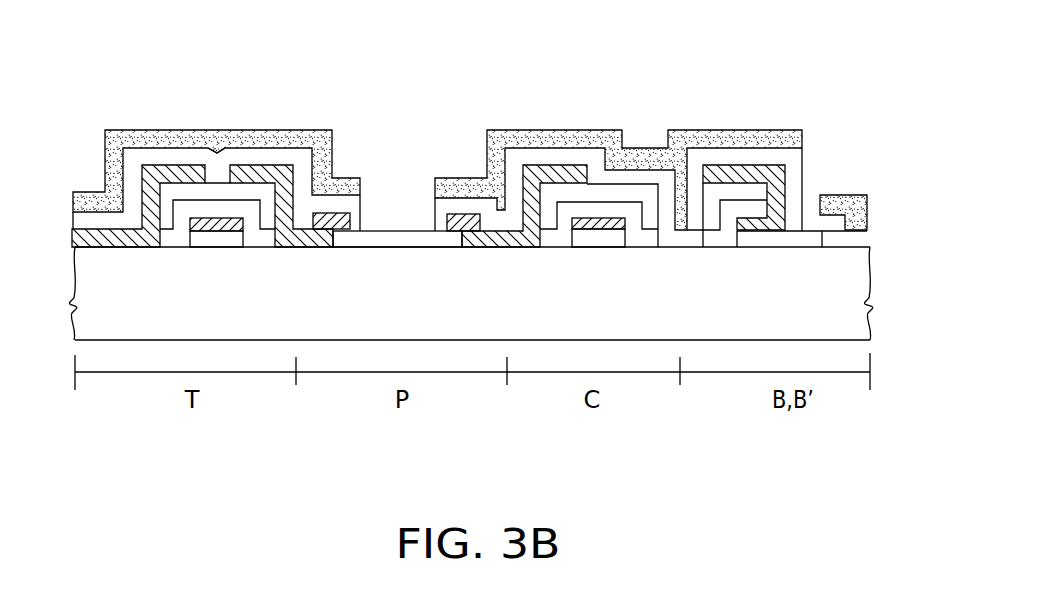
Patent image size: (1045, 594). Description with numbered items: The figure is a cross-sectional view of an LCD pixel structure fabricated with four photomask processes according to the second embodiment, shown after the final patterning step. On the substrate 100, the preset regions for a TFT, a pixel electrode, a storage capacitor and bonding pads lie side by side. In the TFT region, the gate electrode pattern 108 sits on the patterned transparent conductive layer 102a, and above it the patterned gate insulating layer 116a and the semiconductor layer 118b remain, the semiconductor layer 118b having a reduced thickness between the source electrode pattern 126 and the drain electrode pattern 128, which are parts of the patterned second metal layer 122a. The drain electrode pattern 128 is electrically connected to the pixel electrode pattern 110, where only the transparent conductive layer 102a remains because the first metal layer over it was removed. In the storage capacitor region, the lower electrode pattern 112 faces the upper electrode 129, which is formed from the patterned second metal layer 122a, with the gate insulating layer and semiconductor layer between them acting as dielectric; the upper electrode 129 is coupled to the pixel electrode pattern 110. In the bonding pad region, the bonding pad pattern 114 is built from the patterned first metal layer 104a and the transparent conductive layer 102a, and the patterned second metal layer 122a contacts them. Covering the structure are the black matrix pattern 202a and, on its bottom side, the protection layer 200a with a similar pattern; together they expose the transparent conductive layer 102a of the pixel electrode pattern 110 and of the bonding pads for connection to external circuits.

The substrate 100 is at (818, 332).
The patterned transparent conductive layer 102a is at (808, 240).
The patterned first metal layer 104a is at (750, 233).
The gate electrode pattern 108 is at (233, 207).
The pixel electrode pattern 110 is at (403, 210).
The lower electrode pattern 112 is at (600, 202).
The bonding pad pattern 114 is at (801, 217).
The patterned gate insulating layer 116a is at (255, 245).
The semiconductor layer 118b is at (167, 217).
The patterned second metal layer 122a is at (733, 168).
The source electrode pattern 126 is at (177, 149).
The drain electrode pattern 128 is at (257, 151).
The upper electrode 129 is at (561, 148).
The protection layer 200a is at (133, 158).
The black matrix pattern 202a is at (220, 135).